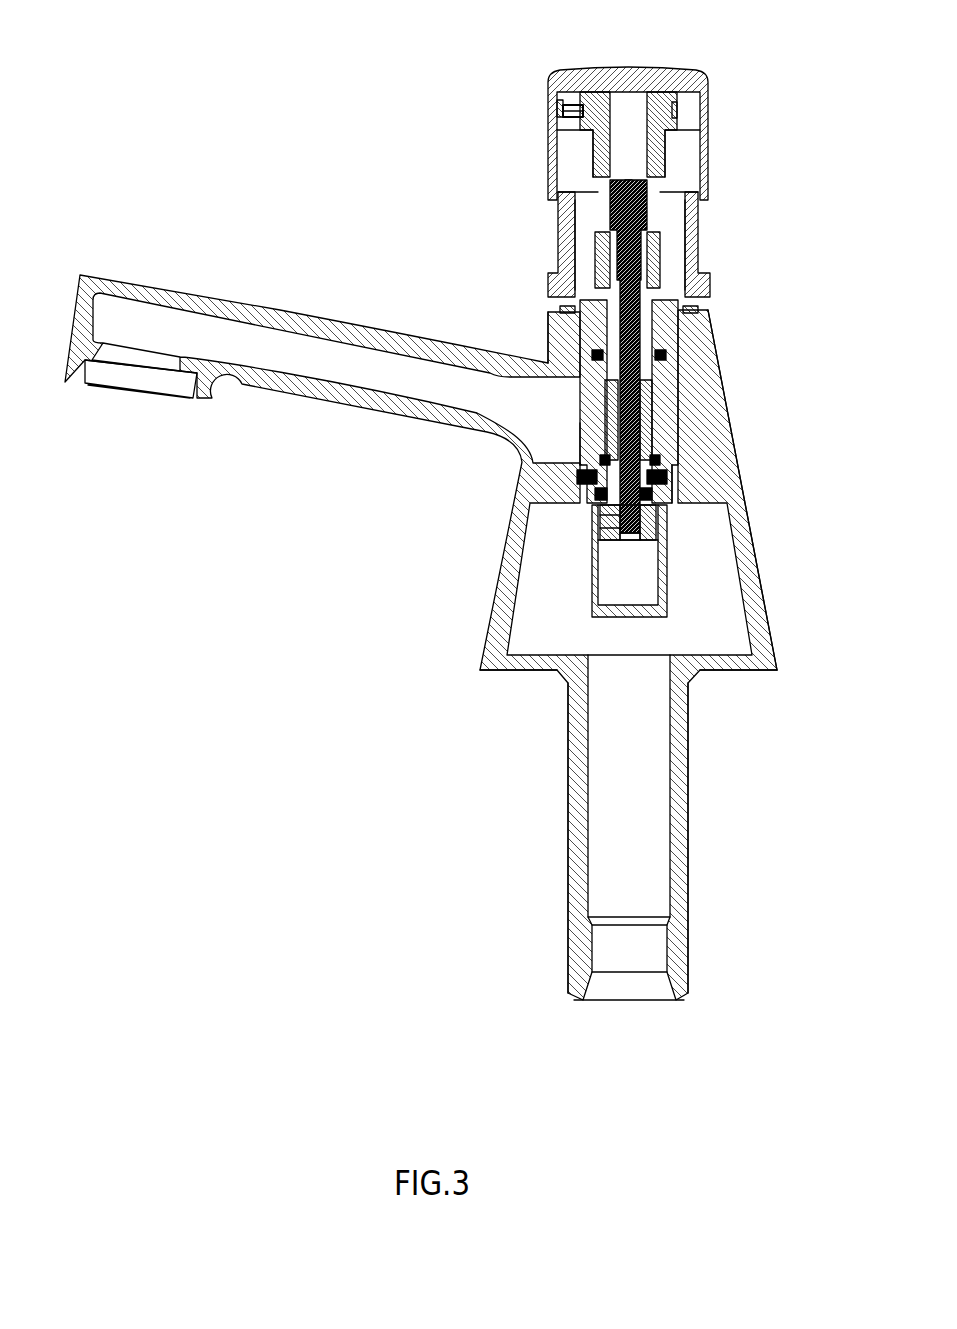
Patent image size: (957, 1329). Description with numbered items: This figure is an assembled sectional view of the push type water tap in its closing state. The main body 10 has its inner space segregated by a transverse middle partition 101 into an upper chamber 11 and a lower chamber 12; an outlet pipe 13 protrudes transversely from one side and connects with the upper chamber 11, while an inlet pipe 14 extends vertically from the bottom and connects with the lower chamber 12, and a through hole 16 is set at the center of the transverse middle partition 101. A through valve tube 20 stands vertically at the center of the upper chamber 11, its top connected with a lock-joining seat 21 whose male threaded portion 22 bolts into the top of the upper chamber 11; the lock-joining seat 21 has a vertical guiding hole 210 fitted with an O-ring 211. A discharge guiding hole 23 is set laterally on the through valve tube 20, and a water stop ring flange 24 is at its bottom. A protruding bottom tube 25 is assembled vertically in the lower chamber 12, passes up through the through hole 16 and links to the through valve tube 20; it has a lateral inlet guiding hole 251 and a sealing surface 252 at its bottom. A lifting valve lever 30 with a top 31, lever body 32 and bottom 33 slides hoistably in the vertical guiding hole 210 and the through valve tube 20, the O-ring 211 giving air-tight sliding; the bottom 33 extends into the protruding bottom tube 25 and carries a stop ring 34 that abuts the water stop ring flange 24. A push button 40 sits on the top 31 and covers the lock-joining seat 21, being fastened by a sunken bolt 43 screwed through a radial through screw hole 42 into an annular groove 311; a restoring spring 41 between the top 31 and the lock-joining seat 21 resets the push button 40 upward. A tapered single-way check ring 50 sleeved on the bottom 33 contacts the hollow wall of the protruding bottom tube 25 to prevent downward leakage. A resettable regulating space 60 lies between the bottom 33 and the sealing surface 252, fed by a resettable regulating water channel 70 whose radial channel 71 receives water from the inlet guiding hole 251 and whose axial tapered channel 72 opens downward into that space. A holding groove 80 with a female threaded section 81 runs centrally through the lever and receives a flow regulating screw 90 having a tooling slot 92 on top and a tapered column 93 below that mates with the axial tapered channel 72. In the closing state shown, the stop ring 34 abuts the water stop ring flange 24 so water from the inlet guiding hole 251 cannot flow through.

The main body 10 is at (458, 680).
The upper chamber 11 is at (548, 467).
The lower chamber 12 is at (522, 632).
The outlet pipe 13 is at (283, 384).
The inlet pipe 14 is at (690, 785).
The through hole 16 is at (662, 505).
The through valve tube 20 is at (547, 387).
The lock-joining seat 21 is at (568, 238).
The male threaded portion 22 is at (692, 310).
The discharge guiding hole 23 is at (577, 440).
The water stop ring flange 24 is at (672, 452).
The protruding bottom tube 25 is at (668, 570).
The lifting valve lever 30 is at (612, 178).
The top 31 is at (598, 95).
The lever body 32 is at (655, 392).
The bottom 33 is at (585, 476).
The stop ring 34 is at (660, 490).
The push button 40 is at (708, 92).
The restoring spring 41 is at (676, 160).
The radial through screw hole 42 is at (557, 103).
The sunken bolt 43 is at (563, 109).
The single-way check ring 50 is at (670, 520).
The resettable regulating space 60 is at (615, 577).
The resettable regulating water channel 70 is at (420, 568).
The radial channel 71 is at (600, 515).
The axial tapered channel 72 is at (598, 528).
The holding groove 80 is at (608, 280).
The female threaded section 81 is at (645, 236).
The flow regulating screw 90 is at (646, 284).
The tooling slot 92 is at (634, 186).
The tapered column 93 is at (628, 540).
The transverse middle partition 101 is at (700, 483).
The vertical guiding hole 210 is at (540, 368).
The O-ring 211 is at (565, 315).
The inlet guiding hole 251 is at (600, 492).
The sealing surface 252 is at (630, 620).
The annular groove 311 is at (566, 104).